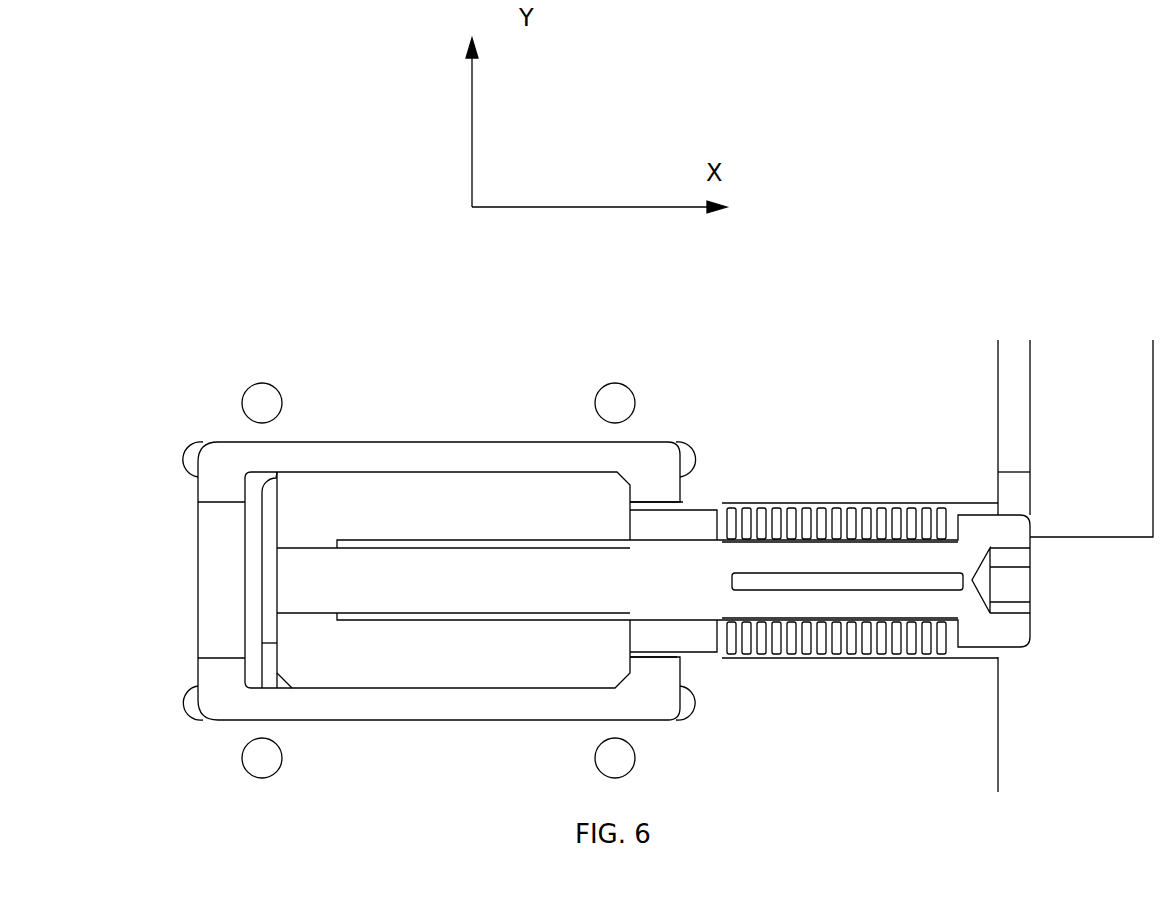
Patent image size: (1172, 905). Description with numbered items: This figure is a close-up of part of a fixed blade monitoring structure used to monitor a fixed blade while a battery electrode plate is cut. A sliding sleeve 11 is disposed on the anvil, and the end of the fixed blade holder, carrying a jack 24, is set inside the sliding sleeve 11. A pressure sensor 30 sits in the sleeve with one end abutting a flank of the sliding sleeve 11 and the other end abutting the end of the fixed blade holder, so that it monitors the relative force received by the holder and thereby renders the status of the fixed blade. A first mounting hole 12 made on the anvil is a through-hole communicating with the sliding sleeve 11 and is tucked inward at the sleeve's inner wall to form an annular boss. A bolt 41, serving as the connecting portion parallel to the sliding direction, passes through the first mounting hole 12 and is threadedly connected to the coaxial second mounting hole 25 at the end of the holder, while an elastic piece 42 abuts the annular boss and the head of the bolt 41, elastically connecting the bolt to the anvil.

The sliding sleeve 11 is at (484, 460).
The first mounting hole 12 is at (958, 513).
The jack 24 is at (392, 517).
The second mounting hole 25 is at (312, 578).
The pressure sensor 30 is at (270, 600).
The bolt 41 is at (690, 588).
The elastic piece 42 is at (842, 510).